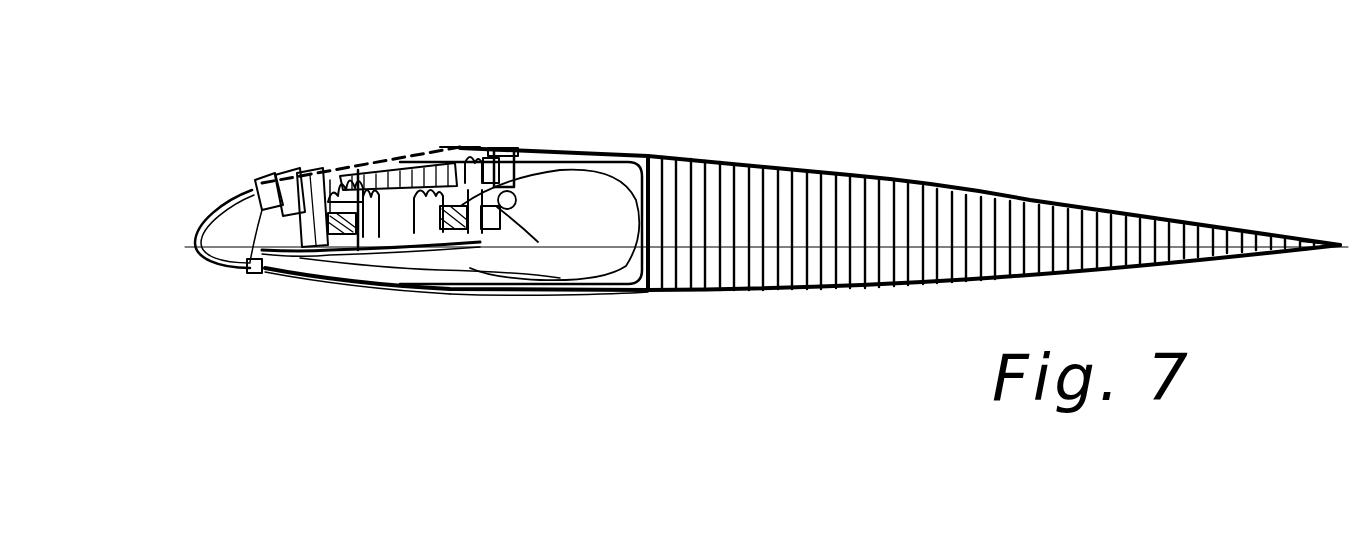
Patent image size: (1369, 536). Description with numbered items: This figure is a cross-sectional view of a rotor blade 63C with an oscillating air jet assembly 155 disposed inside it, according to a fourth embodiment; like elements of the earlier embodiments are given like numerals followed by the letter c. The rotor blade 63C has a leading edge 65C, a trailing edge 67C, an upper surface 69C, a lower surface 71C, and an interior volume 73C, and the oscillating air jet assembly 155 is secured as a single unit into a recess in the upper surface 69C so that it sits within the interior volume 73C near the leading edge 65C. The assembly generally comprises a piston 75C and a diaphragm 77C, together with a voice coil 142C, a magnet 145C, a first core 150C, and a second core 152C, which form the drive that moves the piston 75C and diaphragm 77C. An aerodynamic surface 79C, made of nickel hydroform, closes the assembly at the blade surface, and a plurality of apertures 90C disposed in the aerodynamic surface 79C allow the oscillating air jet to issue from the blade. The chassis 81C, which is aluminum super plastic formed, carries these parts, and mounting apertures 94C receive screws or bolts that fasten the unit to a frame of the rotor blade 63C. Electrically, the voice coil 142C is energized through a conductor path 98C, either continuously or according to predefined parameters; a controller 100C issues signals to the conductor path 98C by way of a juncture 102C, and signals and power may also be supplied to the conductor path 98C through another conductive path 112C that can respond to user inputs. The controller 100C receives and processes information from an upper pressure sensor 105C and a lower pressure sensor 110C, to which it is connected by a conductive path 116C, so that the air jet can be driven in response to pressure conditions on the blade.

The rotor blade 63C is at (1105, 210).
The leading edge 65C is at (188, 247).
The trailing edge 67C is at (1340, 248).
The upper surface 69C is at (948, 185).
The lower surface 71C is at (848, 292).
The interior volume 73C is at (628, 225).
The piston 75C is at (343, 160).
The diaphragm 77C is at (307, 165).
The aerodynamic surface 79C is at (477, 148).
The chassis 81C is at (472, 232).
The apertures 90C is at (450, 145).
The mounting apertures 94C is at (265, 180).
The conductor path 98C is at (523, 193).
The controller 100C is at (538, 242).
The juncture 102C is at (550, 290).
The upper pressure sensor 105C is at (250, 190).
The lower pressure sensor 110C is at (247, 270).
The other conductive path 112C is at (508, 212).
The conductive path 116C is at (300, 277).
The voice coil 142C is at (357, 250).
The magnet 145C is at (443, 232).
The first core 150C is at (330, 158).
The second core 152C is at (347, 283).
The oscillating air jet assembly 155 is at (462, 148).